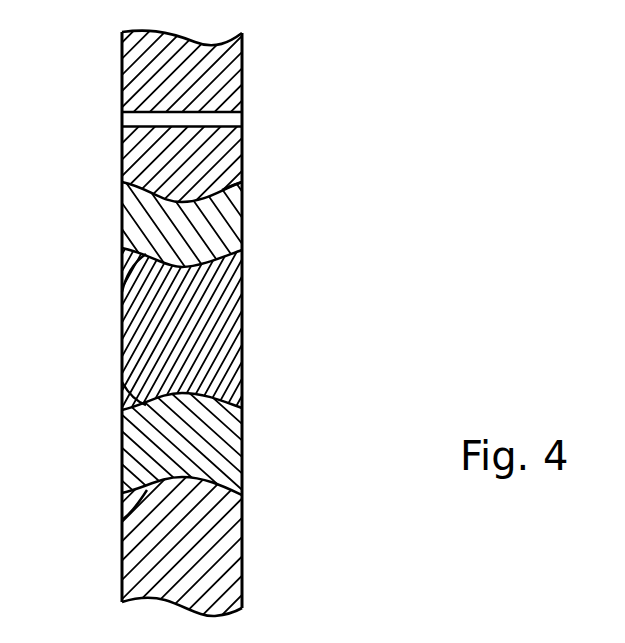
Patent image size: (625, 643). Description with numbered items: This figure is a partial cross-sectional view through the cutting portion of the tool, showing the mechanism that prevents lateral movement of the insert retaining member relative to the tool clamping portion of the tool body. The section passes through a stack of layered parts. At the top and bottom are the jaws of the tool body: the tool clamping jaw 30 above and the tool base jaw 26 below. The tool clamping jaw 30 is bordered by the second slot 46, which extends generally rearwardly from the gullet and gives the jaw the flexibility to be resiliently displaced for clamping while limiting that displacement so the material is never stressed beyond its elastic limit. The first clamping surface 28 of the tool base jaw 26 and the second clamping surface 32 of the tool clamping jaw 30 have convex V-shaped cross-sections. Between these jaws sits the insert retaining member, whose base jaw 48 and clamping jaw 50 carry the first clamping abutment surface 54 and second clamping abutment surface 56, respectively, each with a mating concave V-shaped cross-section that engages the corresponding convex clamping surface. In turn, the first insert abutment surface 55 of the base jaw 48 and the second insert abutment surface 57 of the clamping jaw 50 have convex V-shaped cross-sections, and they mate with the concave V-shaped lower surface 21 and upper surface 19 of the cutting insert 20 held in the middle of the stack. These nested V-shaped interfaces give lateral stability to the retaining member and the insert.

The upper surface 19 is at (145, 254).
The cutting insert 20 is at (203, 318).
The lower surface 21 is at (164, 386).
The tool base jaw 26 is at (215, 547).
The first clamping surface 28 is at (215, 484).
The tool clamping jaw 30 is at (153, 163).
The second clamping surface 32 is at (135, 194).
The second slot 46 is at (232, 120).
The base jaw 48 is at (210, 437).
The clamping jaw 50 is at (215, 219).
The first clamping abutment surface 54 is at (122, 520).
The first insert abutment surface 55 is at (122, 382).
The second clamping abutment surface 56 is at (232, 180).
The second insert abutment surface 57 is at (122, 292).